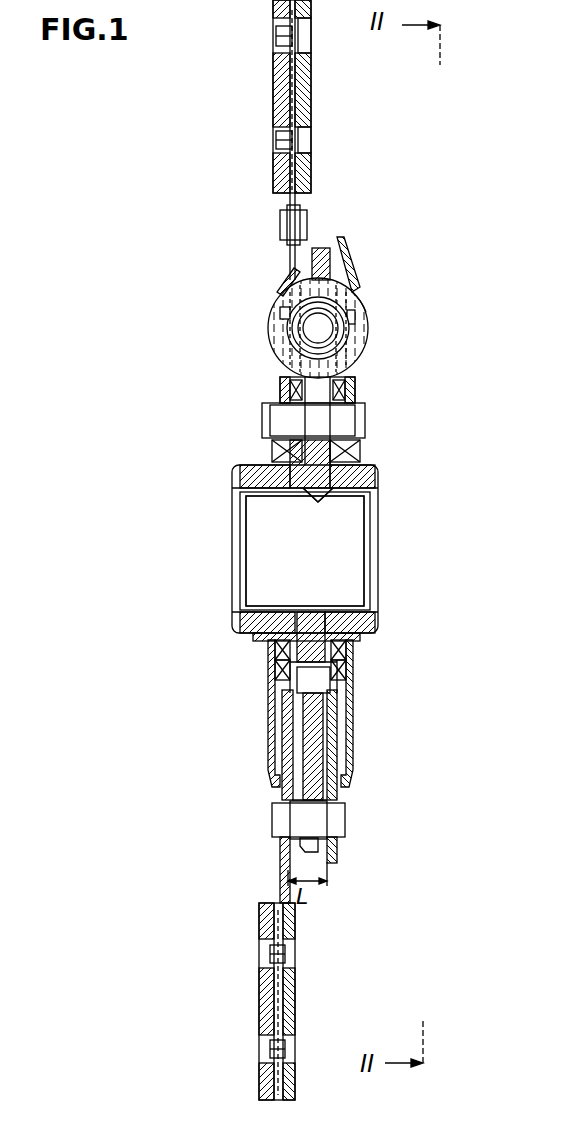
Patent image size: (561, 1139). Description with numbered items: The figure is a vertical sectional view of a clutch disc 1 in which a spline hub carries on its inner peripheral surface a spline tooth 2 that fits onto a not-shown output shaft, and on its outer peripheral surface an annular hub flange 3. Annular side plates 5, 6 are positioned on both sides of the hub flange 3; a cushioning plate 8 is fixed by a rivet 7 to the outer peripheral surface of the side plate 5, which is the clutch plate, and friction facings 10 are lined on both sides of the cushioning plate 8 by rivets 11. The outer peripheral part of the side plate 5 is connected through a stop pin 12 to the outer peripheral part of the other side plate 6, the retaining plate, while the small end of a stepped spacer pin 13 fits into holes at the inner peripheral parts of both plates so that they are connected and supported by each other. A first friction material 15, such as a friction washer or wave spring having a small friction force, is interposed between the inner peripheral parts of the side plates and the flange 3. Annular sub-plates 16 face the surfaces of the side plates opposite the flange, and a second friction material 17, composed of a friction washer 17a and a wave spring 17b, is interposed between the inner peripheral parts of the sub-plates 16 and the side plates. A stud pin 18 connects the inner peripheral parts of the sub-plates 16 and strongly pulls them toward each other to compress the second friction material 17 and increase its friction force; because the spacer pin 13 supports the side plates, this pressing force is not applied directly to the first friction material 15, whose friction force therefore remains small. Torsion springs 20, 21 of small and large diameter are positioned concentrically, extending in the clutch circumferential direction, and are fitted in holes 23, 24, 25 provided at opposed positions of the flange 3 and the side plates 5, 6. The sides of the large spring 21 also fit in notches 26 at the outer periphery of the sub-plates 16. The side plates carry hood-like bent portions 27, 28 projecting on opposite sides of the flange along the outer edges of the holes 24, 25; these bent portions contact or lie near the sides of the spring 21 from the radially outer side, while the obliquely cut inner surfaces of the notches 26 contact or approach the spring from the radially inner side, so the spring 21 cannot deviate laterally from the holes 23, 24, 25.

The housing 1 is at (250, 632).
The spline tooth 2 is at (255, 602).
The hub flange 3 is at (308, 745).
The side plate 5 is at (278, 770).
The side plate 6 is at (337, 773).
The rivet 7 is at (280, 226).
The cushioning plate 8 is at (293, 165).
The friction facing 10 is at (275, 95).
The rivet 11 is at (278, 40).
The stop pin 12 is at (345, 820).
The spacer pin 13 is at (330, 710).
The first friction material 15 is at (318, 640).
The sub-plate 16 is at (283, 390).
The second friction material 17 is at (300, 535).
The friction washer 17a is at (320, 503).
The wave spring 17b is at (350, 490).
The stud pin 18 is at (262, 422).
The torsion spring 20 is at (333, 333).
The torsion spring 21 is at (355, 318).
The hole 23 is at (322, 248).
The hole 24 is at (283, 308).
The hole 25 is at (360, 300).
The notch 26 is at (288, 327).
The bent portion 27 is at (280, 287).
The bent portion 28 is at (345, 275).